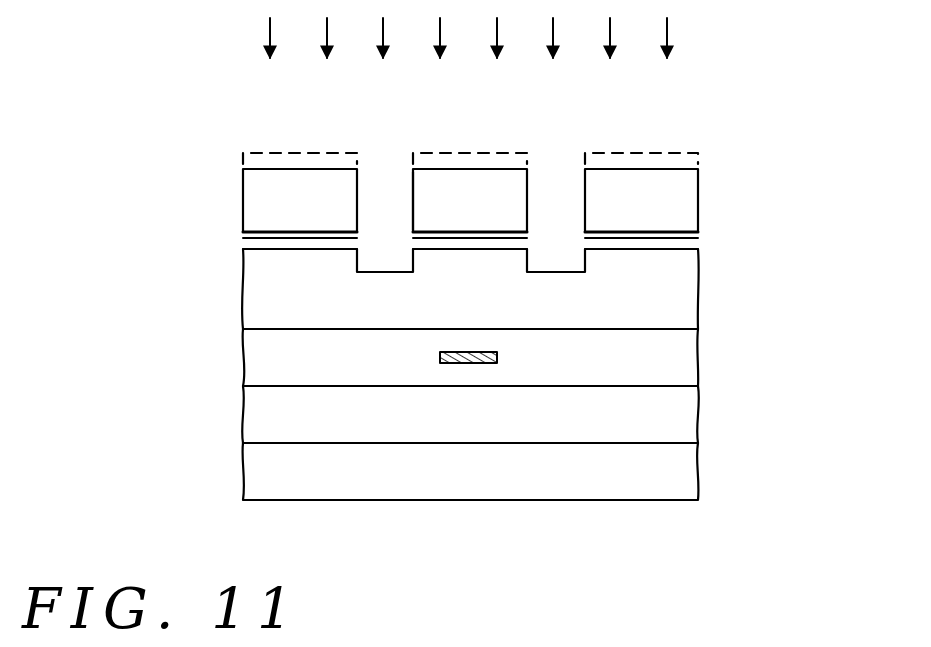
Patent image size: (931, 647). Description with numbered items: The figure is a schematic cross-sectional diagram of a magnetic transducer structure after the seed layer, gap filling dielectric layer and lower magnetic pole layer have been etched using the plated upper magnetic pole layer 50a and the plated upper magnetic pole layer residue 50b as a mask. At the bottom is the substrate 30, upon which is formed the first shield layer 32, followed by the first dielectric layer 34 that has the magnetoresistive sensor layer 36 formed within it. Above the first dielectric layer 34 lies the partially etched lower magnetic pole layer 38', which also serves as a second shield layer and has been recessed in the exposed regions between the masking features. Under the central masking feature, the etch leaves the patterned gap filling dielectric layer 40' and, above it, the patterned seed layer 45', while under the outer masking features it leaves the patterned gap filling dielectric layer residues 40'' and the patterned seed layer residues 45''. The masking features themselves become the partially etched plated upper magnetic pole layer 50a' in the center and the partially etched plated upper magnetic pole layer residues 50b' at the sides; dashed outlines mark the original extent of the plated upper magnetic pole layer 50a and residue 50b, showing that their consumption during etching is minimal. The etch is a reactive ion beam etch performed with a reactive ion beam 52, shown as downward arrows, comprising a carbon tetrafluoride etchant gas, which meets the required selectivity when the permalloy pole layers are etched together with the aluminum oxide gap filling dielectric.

The substrate 30 is at (257, 470).
The first shield layer 32 is at (257, 414).
The first dielectric layer 34 is at (257, 357).
The magnetoresistive (MR) sensor layer 36 is at (470, 363).
The partially etched lower magnetic pole layer 38' is at (429, 289).
The patterned gap filling dielectric layer residues 40'' is at (465, 255).
The patterned seed layer residues 45'' is at (465, 226).
The patterned gap filling dielectric layer 40' is at (536, 396).
The patterned seed layer 45' is at (401, 391).
The plated upper magnetic pole layer 50a is at (487, 114).
The partially etched plated upper magnetic pole layer 50a' is at (401, 166).
The plated upper magnetic pole layer residue 50b is at (462, 155).
The partially etched plated upper magnetic pole layer residues 50b' is at (467, 200).
The reactive ion beam 52 is at (670, 24).